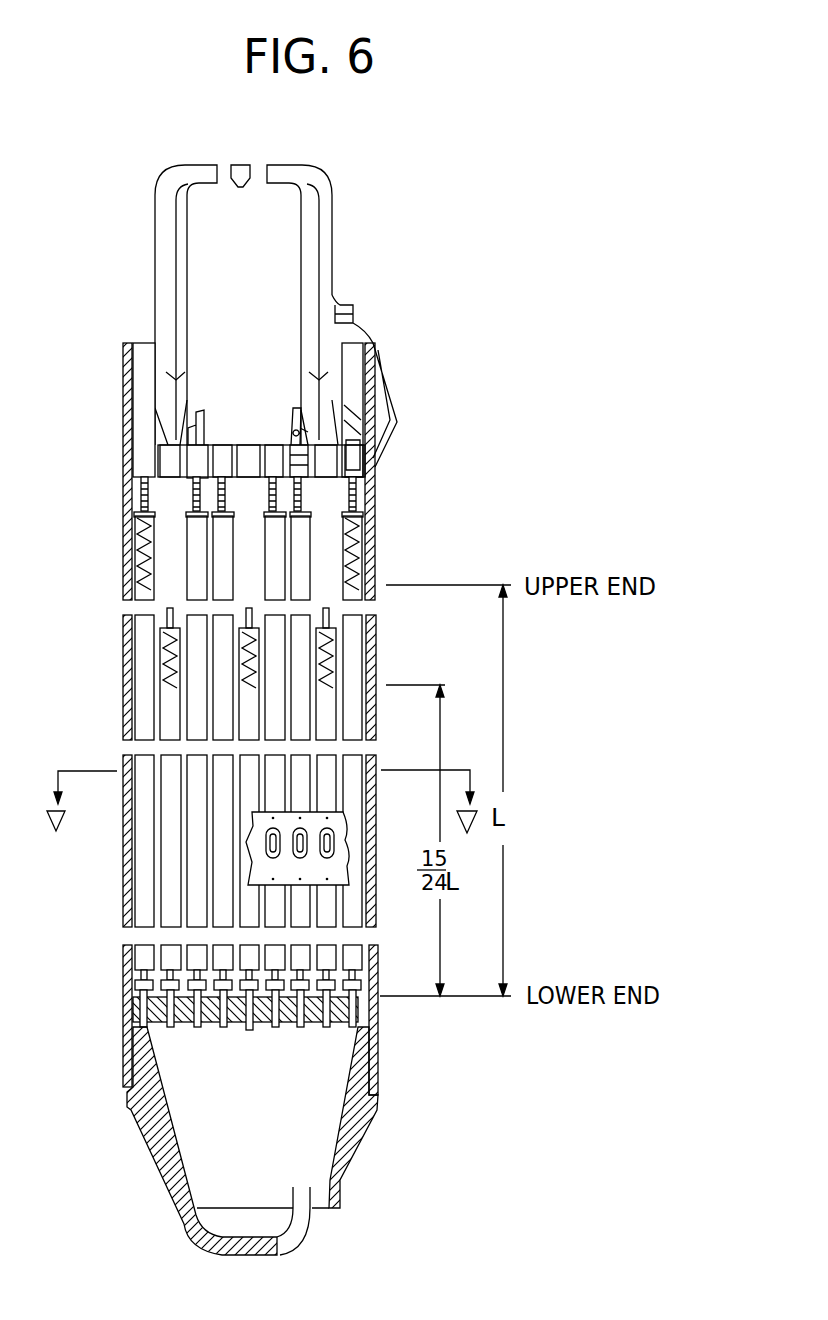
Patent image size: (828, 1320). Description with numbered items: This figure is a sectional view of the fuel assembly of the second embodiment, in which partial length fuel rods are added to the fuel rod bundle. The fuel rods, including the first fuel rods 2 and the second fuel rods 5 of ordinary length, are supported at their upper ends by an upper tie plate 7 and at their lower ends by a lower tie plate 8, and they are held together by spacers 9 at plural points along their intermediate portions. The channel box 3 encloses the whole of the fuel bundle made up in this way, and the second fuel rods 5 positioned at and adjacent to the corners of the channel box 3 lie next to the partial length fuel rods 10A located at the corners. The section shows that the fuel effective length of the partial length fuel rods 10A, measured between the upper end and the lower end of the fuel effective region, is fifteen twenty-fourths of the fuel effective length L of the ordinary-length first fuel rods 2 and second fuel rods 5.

The first fuel rod 2 is at (225, 713).
The channel box 3 is at (377, 537).
The second fuel rod 5 is at (128, 595).
The upper tie plate 7 is at (156, 461).
The lower tie plate 8 is at (135, 1047).
The spacer 9 is at (355, 838).
The partial length fuel rod 10A is at (168, 840).